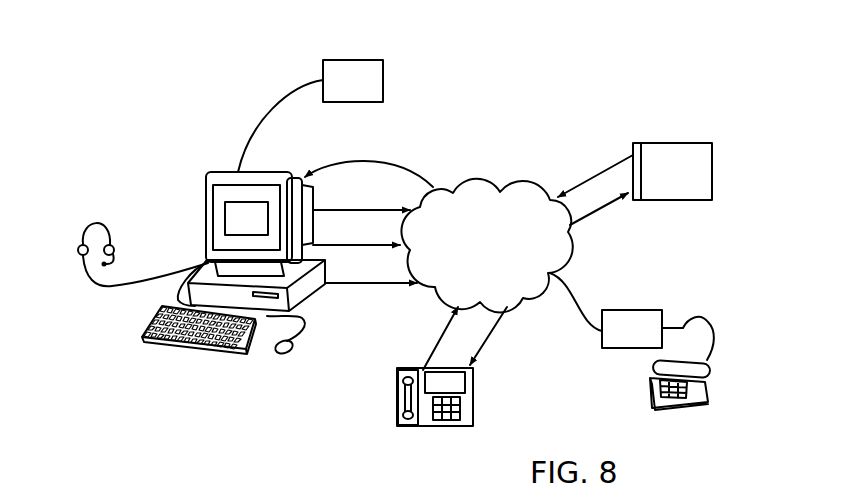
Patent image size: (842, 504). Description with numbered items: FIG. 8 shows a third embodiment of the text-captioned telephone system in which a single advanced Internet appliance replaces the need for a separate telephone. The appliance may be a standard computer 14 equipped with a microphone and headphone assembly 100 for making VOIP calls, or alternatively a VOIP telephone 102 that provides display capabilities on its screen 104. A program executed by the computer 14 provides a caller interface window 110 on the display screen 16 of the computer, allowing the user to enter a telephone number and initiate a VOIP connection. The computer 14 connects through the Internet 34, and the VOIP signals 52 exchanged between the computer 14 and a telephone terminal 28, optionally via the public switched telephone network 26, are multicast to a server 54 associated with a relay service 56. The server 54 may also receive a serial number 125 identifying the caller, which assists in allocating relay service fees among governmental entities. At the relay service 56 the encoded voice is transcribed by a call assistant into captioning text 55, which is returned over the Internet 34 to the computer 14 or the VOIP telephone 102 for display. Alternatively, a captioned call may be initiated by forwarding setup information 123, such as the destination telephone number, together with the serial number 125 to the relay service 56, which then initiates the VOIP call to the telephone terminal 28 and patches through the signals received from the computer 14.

The desk top computer 14 is at (202, 128).
The display screen 16 is at (217, 197).
The caller interface window 110 is at (240, 222).
The microphone and headphone assembly 100 is at (92, 212).
The external telephone terminal 28 is at (358, 60).
The public switched telephone network 26 is at (630, 350).
The Internet 34 is at (500, 257).
The VOIP signals 52 is at (348, 208).
The server 54 is at (637, 142).
The captioning text 55 is at (480, 347).
The relay service 56 is at (413, 168).
The serial number 125 is at (337, 243).
The setup information 123 is at (347, 286).
The VOIP telephone 102 is at (390, 385).
The screen 104 is at (463, 383).